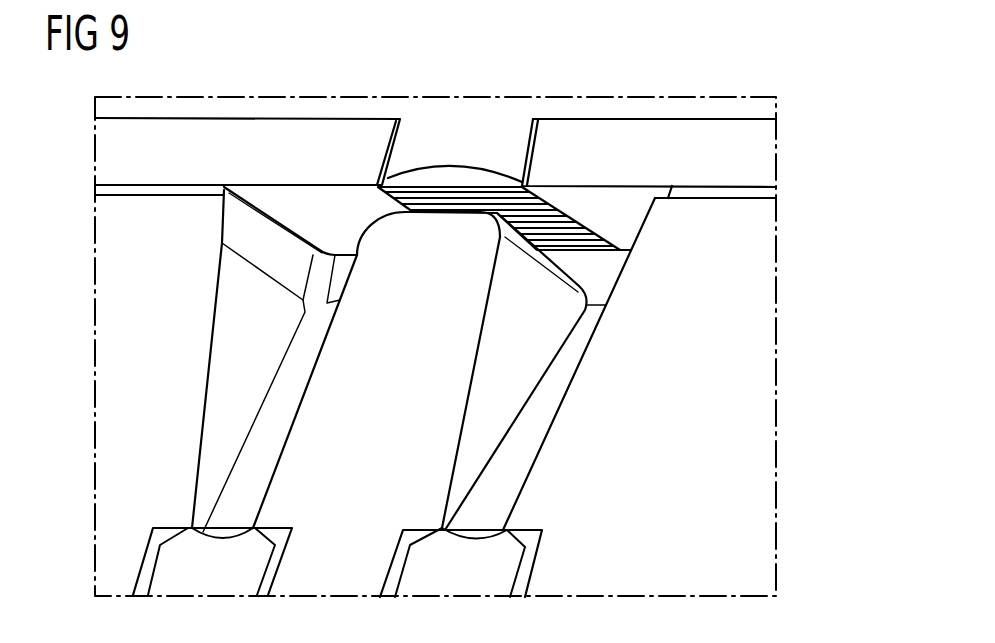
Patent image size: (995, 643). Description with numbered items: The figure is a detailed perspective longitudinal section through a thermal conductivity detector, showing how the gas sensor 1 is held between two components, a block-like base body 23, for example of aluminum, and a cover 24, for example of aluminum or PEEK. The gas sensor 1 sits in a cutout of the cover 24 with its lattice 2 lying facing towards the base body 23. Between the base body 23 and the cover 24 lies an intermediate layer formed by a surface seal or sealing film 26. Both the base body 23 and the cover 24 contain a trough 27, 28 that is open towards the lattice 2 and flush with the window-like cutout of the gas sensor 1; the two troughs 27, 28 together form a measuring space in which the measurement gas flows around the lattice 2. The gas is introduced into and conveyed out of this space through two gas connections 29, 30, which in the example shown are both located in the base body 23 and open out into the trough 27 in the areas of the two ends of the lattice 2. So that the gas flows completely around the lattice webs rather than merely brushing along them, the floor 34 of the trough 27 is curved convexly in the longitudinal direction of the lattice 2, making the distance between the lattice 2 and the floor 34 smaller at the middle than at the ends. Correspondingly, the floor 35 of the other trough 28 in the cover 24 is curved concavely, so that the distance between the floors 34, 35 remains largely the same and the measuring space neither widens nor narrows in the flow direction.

The gas sensor 1 is at (692, 137).
The lattice 2 is at (578, 248).
The base body 23 is at (763, 402).
The cover 24 is at (608, 108).
The sealing film 26 is at (767, 193).
The trough 27 is at (385, 198).
The trough 28 is at (433, 171).
The gas connection 29 is at (230, 562).
The gas connection 30 is at (480, 563).
The floor 34 is at (447, 213).
The floor 35 is at (491, 162).